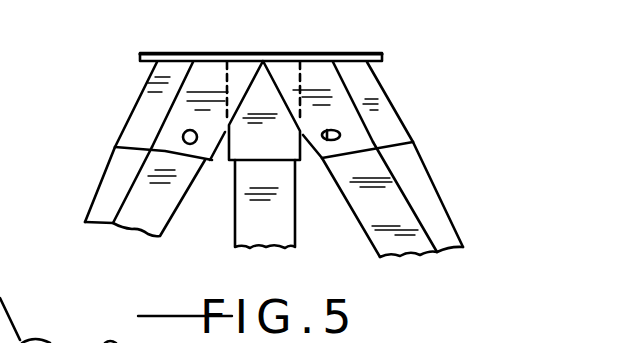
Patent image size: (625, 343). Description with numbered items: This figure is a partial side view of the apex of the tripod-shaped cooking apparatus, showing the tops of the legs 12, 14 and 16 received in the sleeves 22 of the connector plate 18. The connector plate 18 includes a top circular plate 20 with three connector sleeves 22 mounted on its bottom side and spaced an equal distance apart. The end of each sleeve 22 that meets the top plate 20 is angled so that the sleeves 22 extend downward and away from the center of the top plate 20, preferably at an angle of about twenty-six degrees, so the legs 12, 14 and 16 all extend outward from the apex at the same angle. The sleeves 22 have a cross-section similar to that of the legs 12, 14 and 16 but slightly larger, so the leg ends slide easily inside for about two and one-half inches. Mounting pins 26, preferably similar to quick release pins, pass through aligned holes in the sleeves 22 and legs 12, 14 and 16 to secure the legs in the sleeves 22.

The leg 12 is at (110, 198).
The leg 14 is at (249, 222).
The leg 16 is at (438, 202).
The connector plate 18 is at (383, 53).
The top circular plate 20 is at (272, 48).
The connector sleeve 22 is at (395, 107).
The mounting pin 26 is at (182, 138).